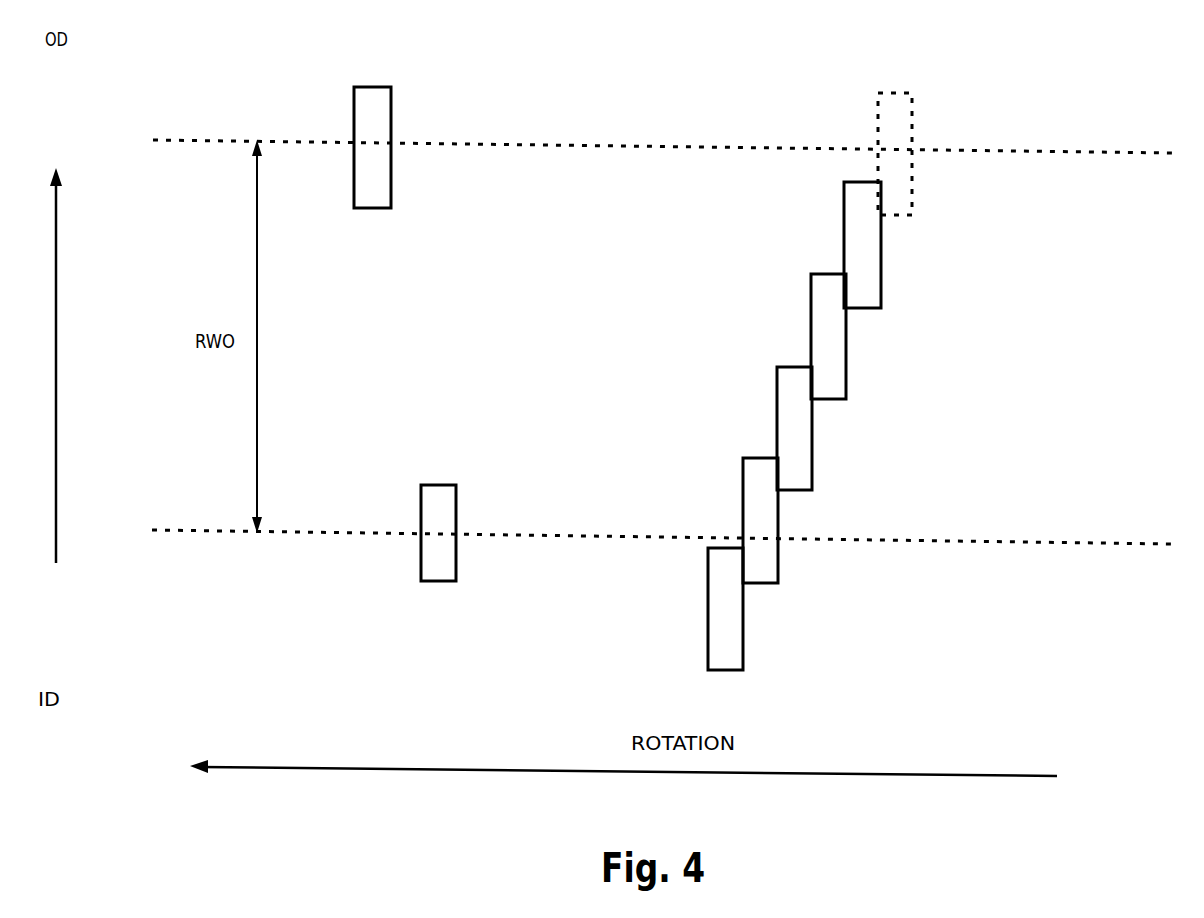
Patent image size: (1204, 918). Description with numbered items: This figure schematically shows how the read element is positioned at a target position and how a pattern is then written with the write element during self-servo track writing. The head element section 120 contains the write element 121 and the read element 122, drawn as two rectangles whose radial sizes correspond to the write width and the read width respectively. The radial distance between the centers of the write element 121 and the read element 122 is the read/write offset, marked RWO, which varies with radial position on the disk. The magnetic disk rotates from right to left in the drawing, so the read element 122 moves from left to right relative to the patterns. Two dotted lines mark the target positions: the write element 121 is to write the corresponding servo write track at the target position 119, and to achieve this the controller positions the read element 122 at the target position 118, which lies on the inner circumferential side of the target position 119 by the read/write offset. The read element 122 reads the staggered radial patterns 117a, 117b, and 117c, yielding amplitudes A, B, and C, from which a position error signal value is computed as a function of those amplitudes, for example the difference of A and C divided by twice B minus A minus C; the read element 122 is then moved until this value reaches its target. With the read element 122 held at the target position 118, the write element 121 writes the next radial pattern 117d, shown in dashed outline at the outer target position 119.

The radial pattern 117a is at (744, 660).
The radial pattern 117b is at (779, 570).
The radial pattern 117c is at (813, 480).
The radial pattern 117d is at (912, 110).
The target position 118 is at (1040, 543).
The target position 119 is at (1075, 153).
The head element section 120 is at (467, 334).
The write element 121 is at (391, 193).
The read element 122 is at (428, 483).